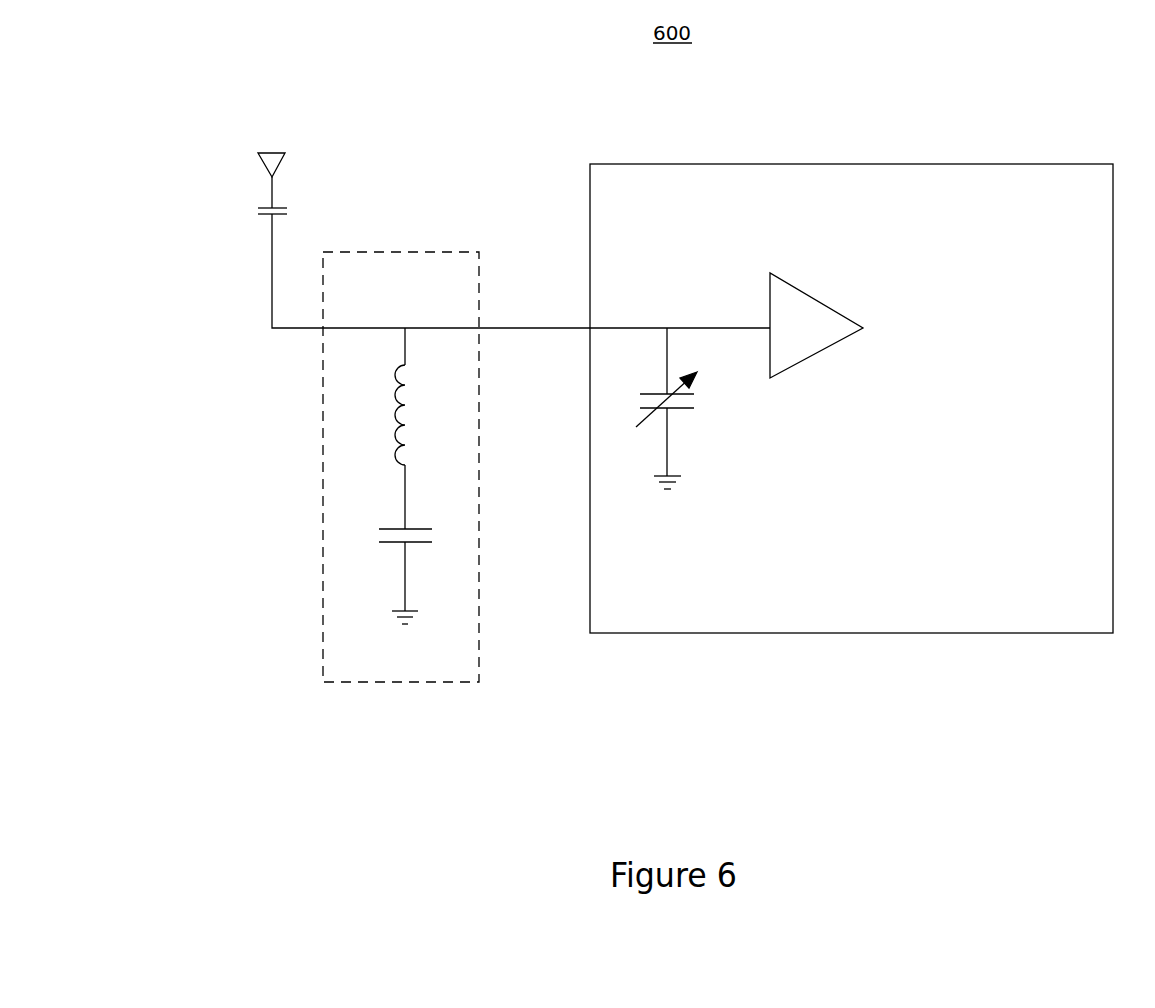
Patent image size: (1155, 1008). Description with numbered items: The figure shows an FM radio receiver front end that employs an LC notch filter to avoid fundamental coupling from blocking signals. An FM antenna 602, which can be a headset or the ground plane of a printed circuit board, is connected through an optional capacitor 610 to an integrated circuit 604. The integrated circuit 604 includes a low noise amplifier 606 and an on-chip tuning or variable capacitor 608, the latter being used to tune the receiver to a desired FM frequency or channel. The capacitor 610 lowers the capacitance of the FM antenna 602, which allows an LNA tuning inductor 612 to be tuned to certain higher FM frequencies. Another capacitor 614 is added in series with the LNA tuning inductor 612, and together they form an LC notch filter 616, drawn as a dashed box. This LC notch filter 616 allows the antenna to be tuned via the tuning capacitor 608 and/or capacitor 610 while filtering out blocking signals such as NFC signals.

The FM antenna 602 is at (281, 152).
The integrated circuit 604 is at (852, 164).
The low noise amplifier 606 is at (822, 298).
The on-chip tuning/variable capacitor 608 is at (668, 408).
The capacitor 610 is at (272, 207).
The LNA tuning inductor 612 is at (395, 413).
The capacitor 614 is at (403, 529).
The LC notch filter 616 is at (383, 252).